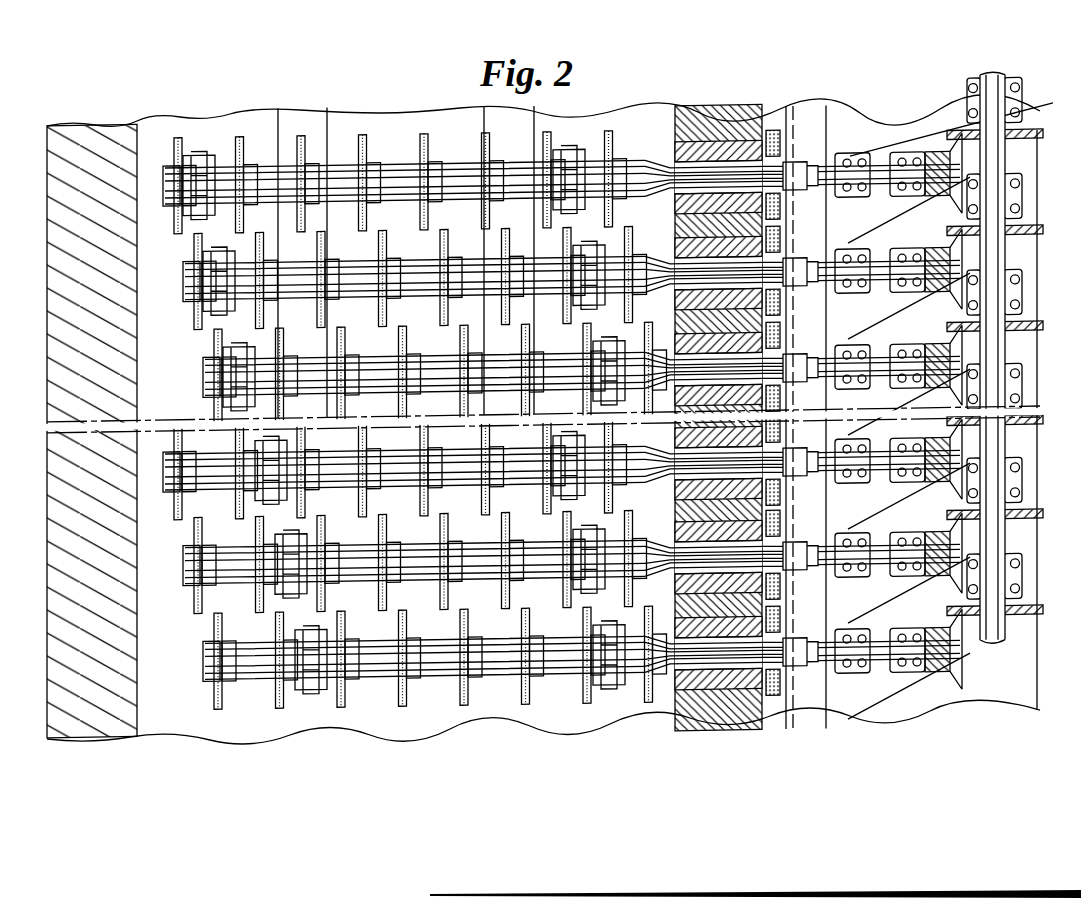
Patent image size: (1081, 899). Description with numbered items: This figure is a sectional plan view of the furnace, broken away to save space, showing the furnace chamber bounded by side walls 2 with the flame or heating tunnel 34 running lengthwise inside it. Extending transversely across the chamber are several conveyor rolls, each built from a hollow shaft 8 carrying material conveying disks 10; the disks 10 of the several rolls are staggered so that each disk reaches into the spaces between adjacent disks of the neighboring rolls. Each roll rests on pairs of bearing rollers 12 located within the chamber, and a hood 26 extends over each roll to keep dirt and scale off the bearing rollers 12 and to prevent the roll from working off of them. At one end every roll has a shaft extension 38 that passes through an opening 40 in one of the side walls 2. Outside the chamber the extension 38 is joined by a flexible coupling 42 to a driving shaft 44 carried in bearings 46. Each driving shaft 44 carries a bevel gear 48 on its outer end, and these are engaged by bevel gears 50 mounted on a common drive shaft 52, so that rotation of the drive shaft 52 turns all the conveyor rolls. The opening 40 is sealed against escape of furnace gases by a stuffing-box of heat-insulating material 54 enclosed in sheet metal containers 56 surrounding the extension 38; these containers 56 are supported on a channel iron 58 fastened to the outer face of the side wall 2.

The side walls 2 is at (700, 118).
The hollow shaft 8 is at (392, 260).
The material conveying disks 10 is at (362, 140).
The bearing rollers 12 is at (203, 217).
The hood 26 is at (585, 150).
The flame or heating tunnel 34 is at (277, 120).
The shaft extension 38 is at (700, 176).
The opening 40 is at (725, 215).
The flexible coupling 42 is at (827, 318).
The driving shaft 44 is at (895, 470).
The bearings 46 is at (905, 158).
The bevel gears 48 is at (948, 372).
The bevel gears 50 is at (963, 136).
The drive shaft 52 is at (1008, 268).
The heat-insulating material 54 is at (772, 140).
The sheet metal containers 56 is at (777, 135).
The channel iron 58 is at (800, 120).